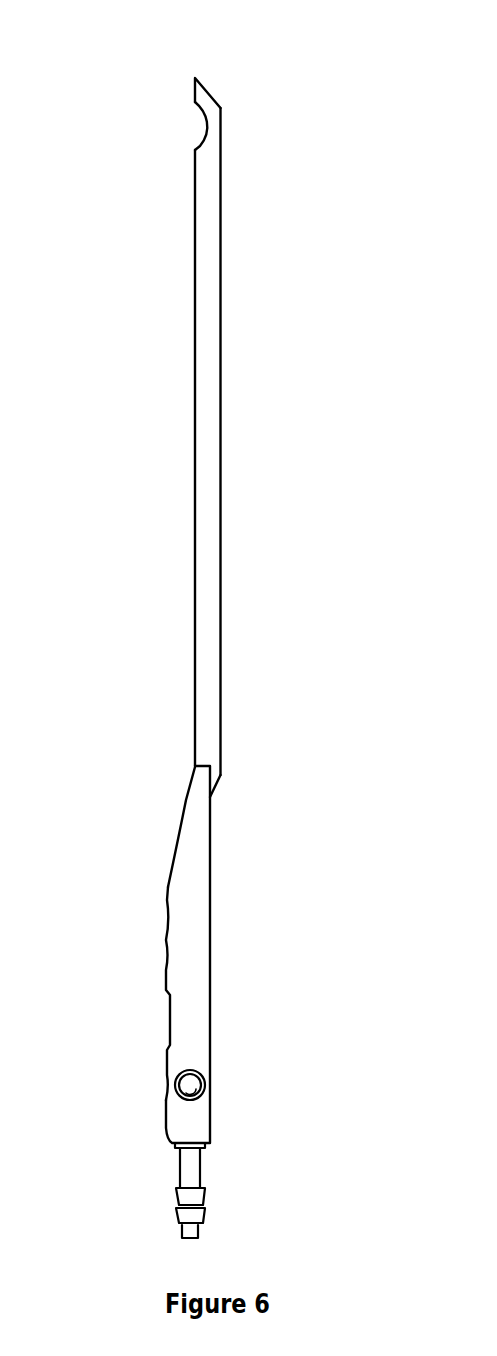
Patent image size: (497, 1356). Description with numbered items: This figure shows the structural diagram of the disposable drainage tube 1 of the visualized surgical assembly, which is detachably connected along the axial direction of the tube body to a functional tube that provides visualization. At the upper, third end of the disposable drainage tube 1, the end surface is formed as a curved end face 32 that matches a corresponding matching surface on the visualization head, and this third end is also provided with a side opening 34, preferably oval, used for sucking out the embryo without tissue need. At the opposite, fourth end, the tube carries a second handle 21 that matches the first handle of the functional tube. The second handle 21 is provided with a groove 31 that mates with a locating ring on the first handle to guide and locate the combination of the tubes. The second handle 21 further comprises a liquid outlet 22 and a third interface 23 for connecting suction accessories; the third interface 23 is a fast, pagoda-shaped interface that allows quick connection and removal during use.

The disposable drainage tube 1 is at (209, 499).
The curved end face 32 is at (212, 93).
The side opening 34 is at (203, 130).
The second handle 21 is at (179, 905).
The groove 31 is at (168, 1017).
The liquid outlet 22 is at (207, 1080).
The third interface 23 is at (203, 1203).